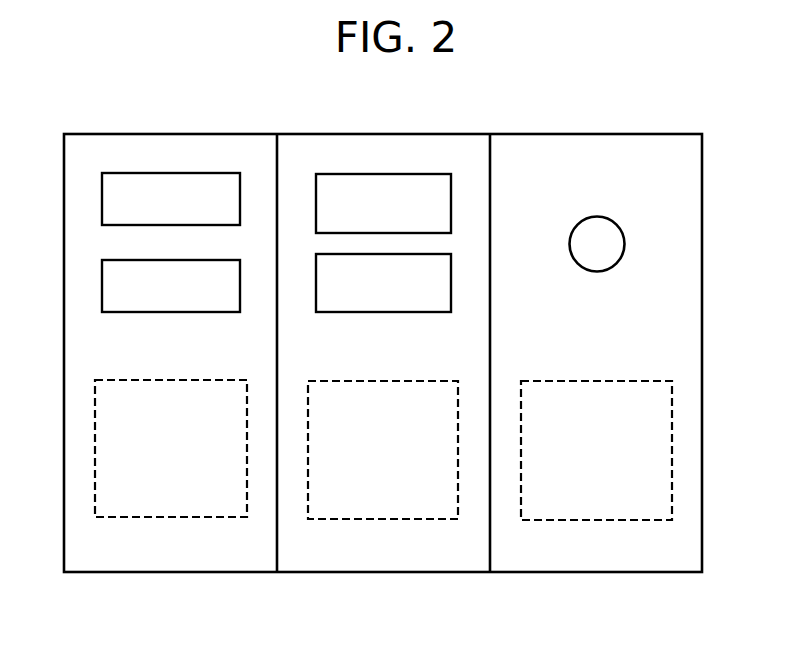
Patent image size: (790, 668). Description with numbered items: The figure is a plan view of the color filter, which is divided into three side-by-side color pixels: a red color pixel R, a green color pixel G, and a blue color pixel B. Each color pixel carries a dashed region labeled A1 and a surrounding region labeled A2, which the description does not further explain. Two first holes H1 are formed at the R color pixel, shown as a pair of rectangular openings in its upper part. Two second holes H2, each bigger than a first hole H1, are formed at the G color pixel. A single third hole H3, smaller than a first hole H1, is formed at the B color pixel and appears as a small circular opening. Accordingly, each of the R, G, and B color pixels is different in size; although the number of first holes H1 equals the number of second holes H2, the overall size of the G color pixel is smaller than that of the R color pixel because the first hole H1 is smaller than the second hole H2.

The first hole H1 is at (177, 207).
The second hole H2 is at (389, 208).
The third hole H3 is at (609, 233).
The emission area A1 is at (383, 450).
The sub-pixel area A2 is at (383, 353).
The R color pixel R is at (166, 418).
The G color pixel G is at (379, 418).
The B color pixel B is at (592, 418).